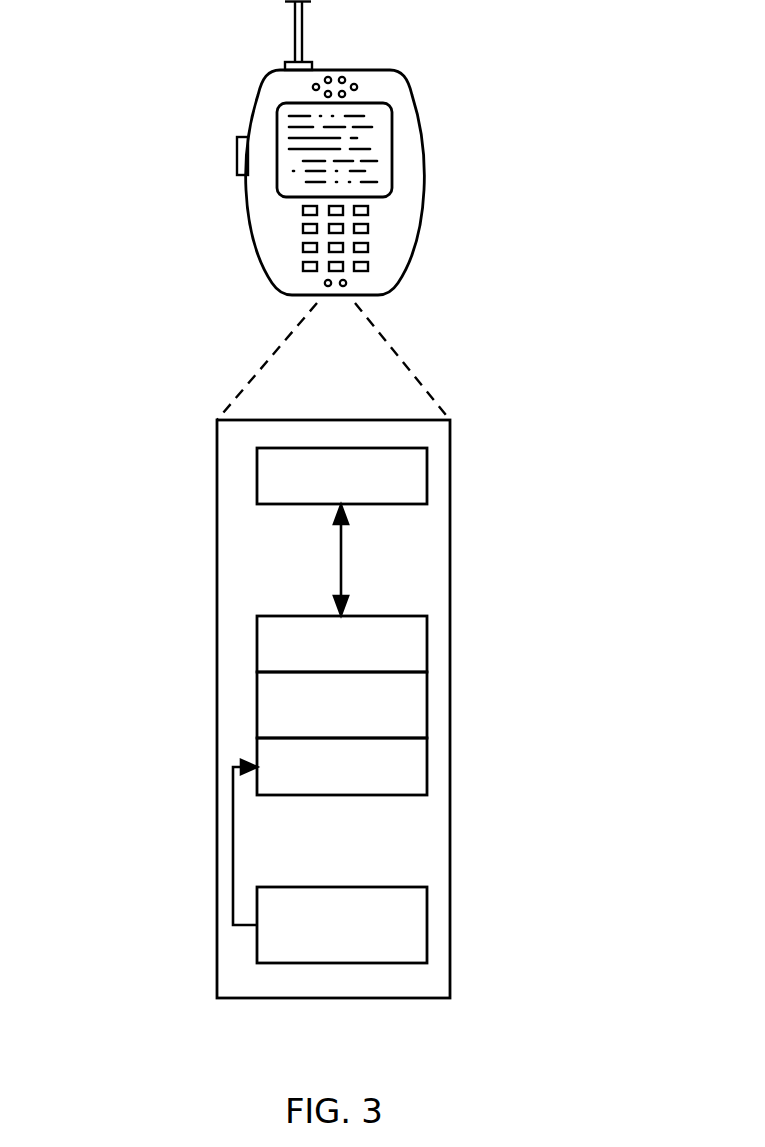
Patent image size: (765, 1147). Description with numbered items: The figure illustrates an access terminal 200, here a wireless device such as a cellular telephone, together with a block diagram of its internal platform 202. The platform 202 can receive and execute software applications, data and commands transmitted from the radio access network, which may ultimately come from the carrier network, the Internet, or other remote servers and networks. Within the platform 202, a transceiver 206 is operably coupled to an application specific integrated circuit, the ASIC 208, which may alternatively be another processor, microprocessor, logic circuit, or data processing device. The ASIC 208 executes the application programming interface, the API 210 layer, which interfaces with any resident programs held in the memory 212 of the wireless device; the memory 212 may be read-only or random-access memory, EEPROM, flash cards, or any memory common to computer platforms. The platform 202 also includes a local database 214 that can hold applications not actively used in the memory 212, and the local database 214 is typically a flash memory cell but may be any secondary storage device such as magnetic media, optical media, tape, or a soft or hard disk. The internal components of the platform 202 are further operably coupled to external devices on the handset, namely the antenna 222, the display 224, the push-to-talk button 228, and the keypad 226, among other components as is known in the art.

The access terminal 200 is at (402, 273).
The platform 202 is at (217, 617).
The transceiver 206 is at (427, 477).
The application specific integrated circuit 208 is at (427, 651).
The application programming interface 210 is at (427, 700).
The memory 212 is at (427, 766).
The local database 214 is at (427, 909).
The antenna 222 is at (303, 9).
The display 224 is at (392, 135).
The keypad 226 is at (368, 229).
The push-to-talk button 228 is at (237, 148).